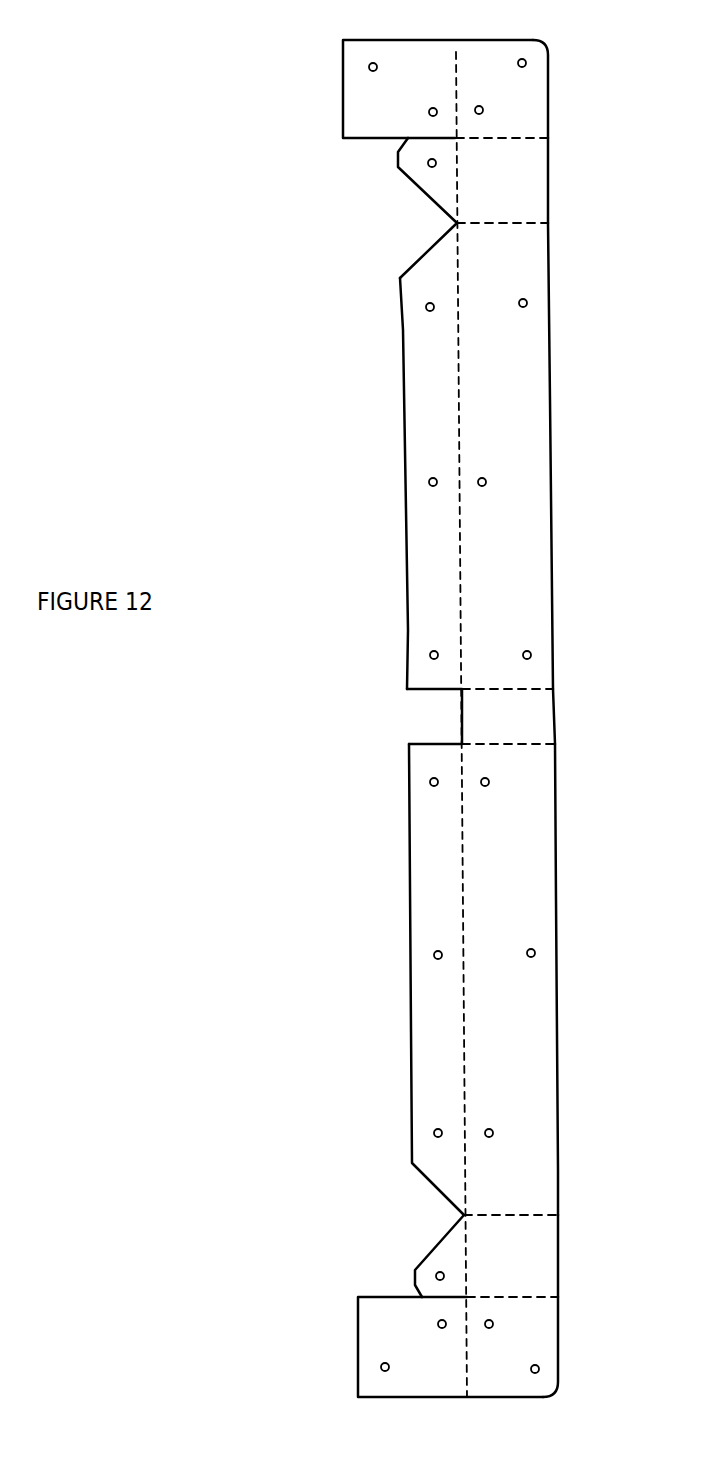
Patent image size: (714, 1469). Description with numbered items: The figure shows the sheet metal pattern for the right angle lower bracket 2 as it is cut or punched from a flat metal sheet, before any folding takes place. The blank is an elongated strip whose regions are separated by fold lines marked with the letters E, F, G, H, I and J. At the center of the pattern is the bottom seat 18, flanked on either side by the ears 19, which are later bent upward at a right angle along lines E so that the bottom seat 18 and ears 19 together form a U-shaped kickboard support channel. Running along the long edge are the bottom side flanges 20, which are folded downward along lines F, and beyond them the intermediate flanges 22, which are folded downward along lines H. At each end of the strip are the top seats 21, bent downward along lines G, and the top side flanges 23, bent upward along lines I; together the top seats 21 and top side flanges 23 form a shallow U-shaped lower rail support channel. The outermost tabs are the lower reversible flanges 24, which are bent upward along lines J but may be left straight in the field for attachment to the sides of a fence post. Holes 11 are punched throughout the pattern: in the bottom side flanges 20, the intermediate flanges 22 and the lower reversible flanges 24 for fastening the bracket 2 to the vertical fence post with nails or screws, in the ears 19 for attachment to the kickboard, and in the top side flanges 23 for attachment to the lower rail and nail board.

The right angle lower bracket 2 is at (291, 406).
The holes 11 is at (438, 300).
The bottom seat 18 is at (560, 717).
The ears 19 is at (552, 402).
The bottom side flanges 20 is at (403, 530).
The top seats 21 is at (553, 187).
The intermediate flanges 22 is at (412, 182).
The top side flanges 23 is at (557, 100).
The lower reversible flanges 24 is at (341, 77).